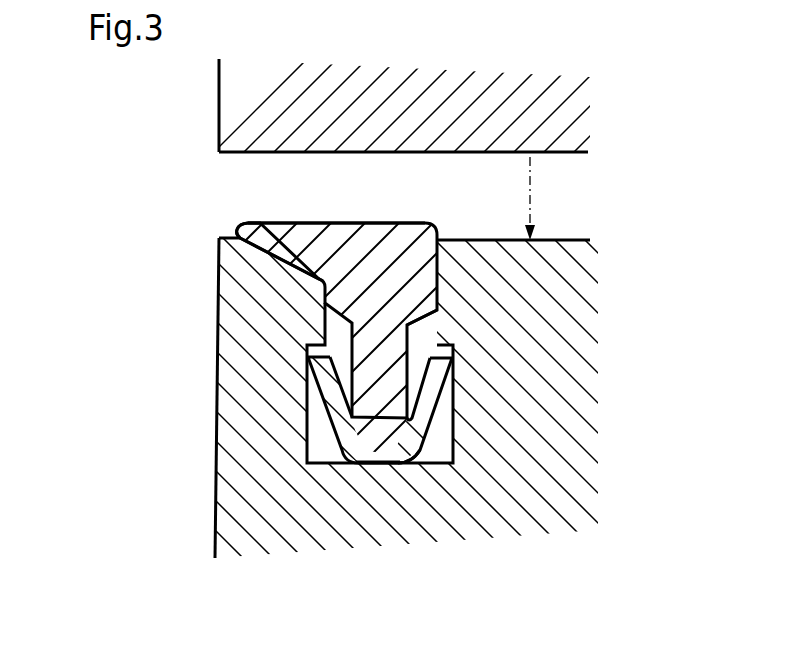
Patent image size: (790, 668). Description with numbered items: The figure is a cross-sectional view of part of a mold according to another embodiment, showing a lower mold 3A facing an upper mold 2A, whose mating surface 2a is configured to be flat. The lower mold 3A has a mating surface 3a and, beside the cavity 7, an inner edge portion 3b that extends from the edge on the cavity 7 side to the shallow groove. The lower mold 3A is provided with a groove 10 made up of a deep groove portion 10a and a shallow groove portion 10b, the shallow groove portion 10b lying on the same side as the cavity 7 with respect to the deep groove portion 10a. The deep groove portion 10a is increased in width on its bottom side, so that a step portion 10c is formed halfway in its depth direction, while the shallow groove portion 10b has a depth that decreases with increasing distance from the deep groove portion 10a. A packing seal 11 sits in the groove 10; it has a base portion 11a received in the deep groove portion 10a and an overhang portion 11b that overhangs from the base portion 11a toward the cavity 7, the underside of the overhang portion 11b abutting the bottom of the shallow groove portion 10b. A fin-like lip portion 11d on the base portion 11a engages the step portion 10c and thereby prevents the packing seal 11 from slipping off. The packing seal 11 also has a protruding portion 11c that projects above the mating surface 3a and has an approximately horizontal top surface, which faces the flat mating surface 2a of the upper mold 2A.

The upper mold 2A is at (575, 107).
The mating surface 2a is at (580, 157).
The lower mold 3A is at (588, 357).
The mating surface 3a is at (578, 240).
The inner edge portion 3b is at (232, 236).
The cavity 7 is at (82, 266).
The groove 10 is at (462, 412).
The deep groove portion 10a is at (444, 452).
The shallow groove portion 10b is at (273, 268).
The step portion 10c is at (452, 340).
The packing seal 11 is at (350, 213).
The base portion 11a is at (377, 452).
The overhang portion 11b is at (258, 221).
The protruding portion 11c is at (300, 222).
The lip portion 11d is at (449, 388).